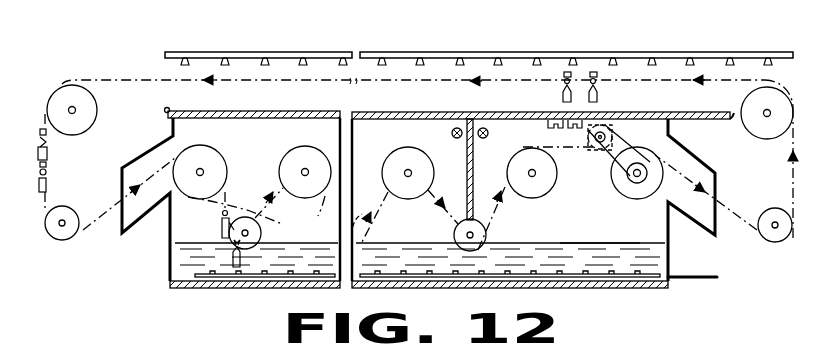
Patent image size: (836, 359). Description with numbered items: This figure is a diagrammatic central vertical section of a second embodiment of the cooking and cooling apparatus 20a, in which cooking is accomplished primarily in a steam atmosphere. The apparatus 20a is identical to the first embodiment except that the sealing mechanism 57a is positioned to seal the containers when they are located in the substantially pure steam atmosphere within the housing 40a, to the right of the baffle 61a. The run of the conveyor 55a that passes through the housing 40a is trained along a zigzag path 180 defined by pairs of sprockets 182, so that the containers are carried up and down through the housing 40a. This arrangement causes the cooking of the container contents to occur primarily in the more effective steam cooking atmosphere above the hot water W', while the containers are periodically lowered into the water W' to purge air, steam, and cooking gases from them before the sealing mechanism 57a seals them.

The cooking and cooling apparatus 20a is at (137, 52).
The housing 40a is at (170, 258).
The conveyor 55a is at (751, 233).
The sealing mechanism 57a is at (547, 116).
The baffle 61a is at (451, 136).
The zigzag path 180 is at (228, 186).
The sprockets 182 is at (552, 216).
The hot water W' is at (600, 232).